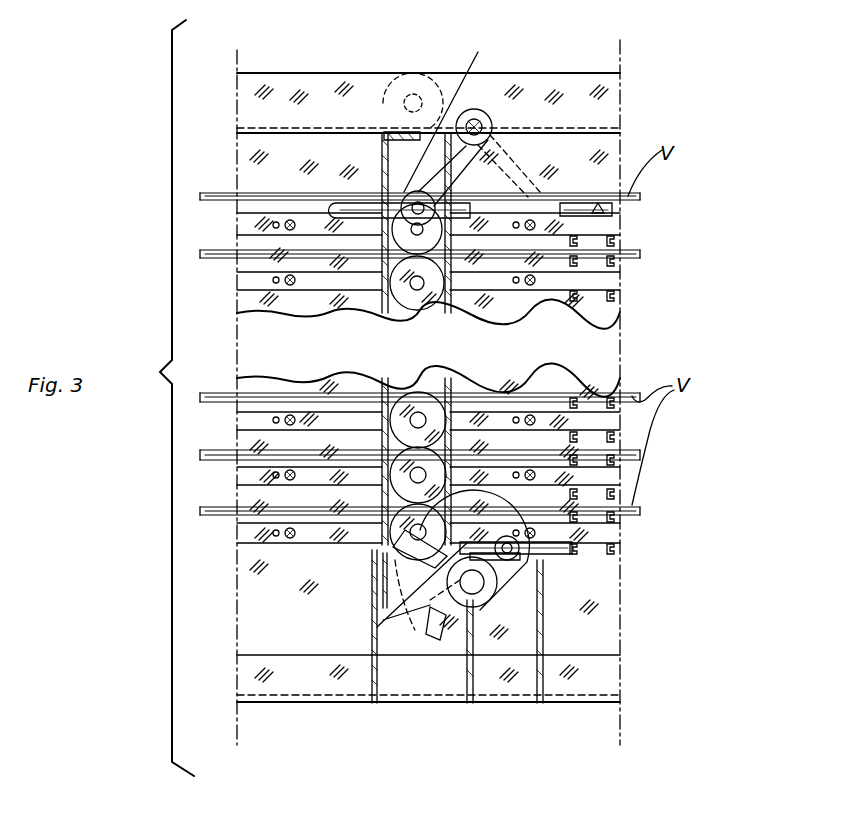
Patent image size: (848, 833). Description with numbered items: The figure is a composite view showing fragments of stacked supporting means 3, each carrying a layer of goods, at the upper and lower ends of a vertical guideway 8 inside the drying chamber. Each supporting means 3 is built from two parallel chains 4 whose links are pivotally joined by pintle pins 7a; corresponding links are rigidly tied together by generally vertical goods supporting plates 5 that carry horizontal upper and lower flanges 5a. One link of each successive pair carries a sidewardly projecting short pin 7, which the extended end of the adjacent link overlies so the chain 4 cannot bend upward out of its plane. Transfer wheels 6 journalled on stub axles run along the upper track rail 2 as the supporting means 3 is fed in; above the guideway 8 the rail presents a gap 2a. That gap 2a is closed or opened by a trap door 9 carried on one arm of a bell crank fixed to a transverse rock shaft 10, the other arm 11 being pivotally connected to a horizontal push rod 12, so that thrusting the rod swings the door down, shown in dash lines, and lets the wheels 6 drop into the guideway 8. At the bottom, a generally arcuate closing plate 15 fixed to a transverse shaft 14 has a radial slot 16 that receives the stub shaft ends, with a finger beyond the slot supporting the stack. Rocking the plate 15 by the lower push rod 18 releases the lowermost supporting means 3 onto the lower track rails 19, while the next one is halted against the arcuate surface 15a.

The upper track rail 2 is at (600, 116).
The gap 2a is at (382, 140).
The supporting means 3 is at (632, 290).
The chain 4 is at (322, 240).
The goods supporting plate 5 is at (614, 210).
The flange 5a is at (598, 200).
The transfer wheel 6 is at (405, 90).
The short pin 7 is at (528, 284).
The pintle pin 7a is at (290, 220).
The vertical guideway 8 is at (382, 262).
The trap door 9 is at (420, 200).
The rock shaft 10 is at (488, 122).
The bell crank arm 11 is at (512, 176).
The push rod 12 is at (375, 200).
The transverse shaft 14 is at (484, 582).
The closing plate 15 is at (417, 648).
The arcuate surface 15a is at (492, 548).
The radial slot 16 is at (382, 590).
The lower push rod 18 is at (542, 556).
The lower track rail 19 is at (285, 672).